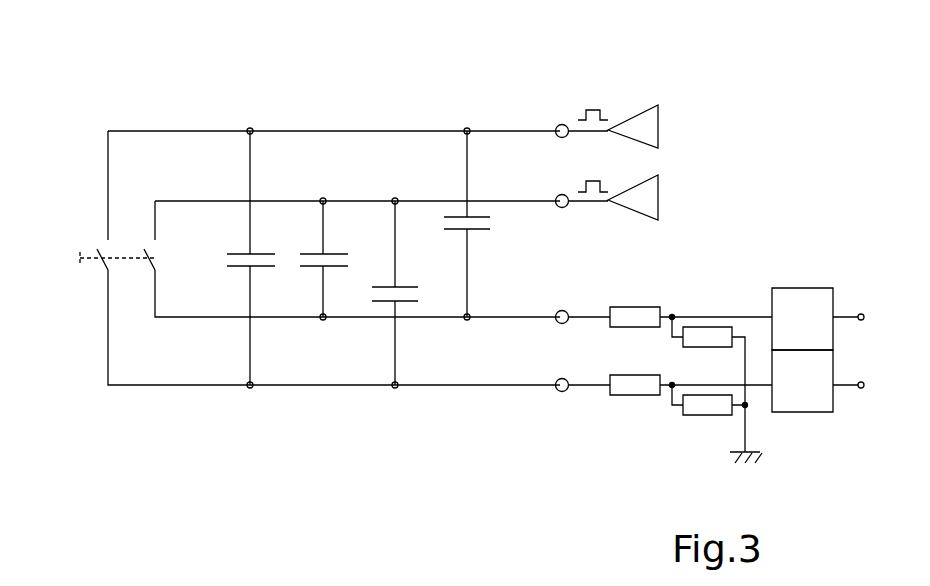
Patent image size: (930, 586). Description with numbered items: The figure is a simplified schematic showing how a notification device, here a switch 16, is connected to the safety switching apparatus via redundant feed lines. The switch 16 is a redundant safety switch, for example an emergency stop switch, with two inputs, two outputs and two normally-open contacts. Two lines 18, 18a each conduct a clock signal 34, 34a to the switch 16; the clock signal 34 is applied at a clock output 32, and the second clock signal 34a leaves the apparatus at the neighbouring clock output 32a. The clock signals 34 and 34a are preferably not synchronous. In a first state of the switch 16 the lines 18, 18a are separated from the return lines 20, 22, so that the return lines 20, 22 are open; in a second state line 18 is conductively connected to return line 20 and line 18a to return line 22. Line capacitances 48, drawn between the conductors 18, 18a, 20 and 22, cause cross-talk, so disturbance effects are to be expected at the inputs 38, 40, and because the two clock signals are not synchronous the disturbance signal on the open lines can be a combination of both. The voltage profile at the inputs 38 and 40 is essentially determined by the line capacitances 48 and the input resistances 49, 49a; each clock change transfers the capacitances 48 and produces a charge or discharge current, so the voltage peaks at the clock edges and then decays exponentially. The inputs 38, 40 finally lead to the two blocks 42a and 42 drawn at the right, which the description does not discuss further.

The switch 16 is at (101, 274).
The line 18 is at (333, 131).
The line 18a is at (355, 201).
The return line 20 is at (177, 317).
The return line 22 is at (213, 386).
The clock output 32 is at (560, 124).
The terminal 32a is at (562, 208).
The clock signal 34 is at (596, 109).
The clock signal 34a is at (598, 188).
The input 38 is at (566, 310).
The input 40 is at (555, 390).
The evaluation unit 42 is at (810, 395).
The evaluation unit 42a is at (806, 307).
The line capacitances 48 is at (252, 157).
The input resistances 49 is at (656, 292).
The resistor network 49a is at (630, 396).